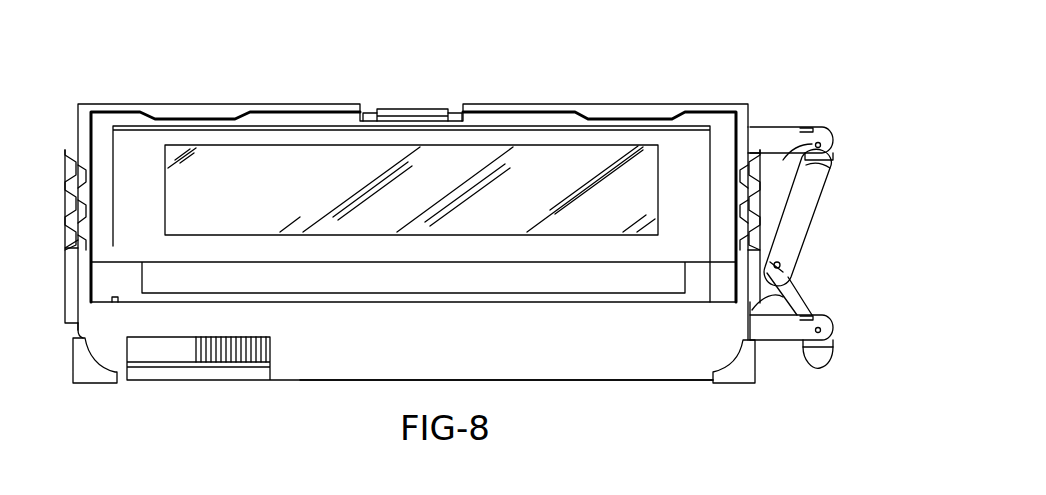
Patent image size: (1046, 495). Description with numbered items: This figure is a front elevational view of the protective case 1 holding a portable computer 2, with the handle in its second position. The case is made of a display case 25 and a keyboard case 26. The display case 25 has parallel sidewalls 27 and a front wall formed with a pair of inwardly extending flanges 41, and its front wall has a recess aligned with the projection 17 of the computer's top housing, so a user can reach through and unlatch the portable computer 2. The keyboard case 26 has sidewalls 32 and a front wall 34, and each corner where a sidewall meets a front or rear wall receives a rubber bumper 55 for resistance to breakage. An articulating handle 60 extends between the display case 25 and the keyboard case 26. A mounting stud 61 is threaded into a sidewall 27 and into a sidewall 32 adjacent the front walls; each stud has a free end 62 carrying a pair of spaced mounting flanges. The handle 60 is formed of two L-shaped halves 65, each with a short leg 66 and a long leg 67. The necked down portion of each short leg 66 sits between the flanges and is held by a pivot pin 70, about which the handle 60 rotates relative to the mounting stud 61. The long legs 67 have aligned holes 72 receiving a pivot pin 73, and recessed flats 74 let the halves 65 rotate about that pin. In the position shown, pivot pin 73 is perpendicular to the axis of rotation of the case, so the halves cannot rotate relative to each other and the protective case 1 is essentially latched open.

The protective case 1 is at (700, 55).
The portable computer 2 is at (332, 128).
The projection 17 is at (412, 109).
The display case 25 is at (118, 97).
The keyboard case 26 is at (328, 386).
The sidewalls 27 is at (757, 117).
The sidewalls 32 is at (76, 330).
The front wall 34 is at (633, 362).
The inwardly extending flanges 41 is at (190, 111).
The rubber bumper 55 is at (94, 385).
The articulating handle 60 is at (885, 375).
The mounting stud 61 is at (785, 135).
The free end 62 is at (815, 138).
The L-shaped halves 65 is at (835, 203).
The short leg 66 is at (831, 163).
The long leg 67 is at (790, 232).
The pivot pin 70 is at (821, 144).
The holes 72 is at (792, 165).
The pivot pin 73 is at (785, 262).
The recessed flats 74 is at (770, 302).